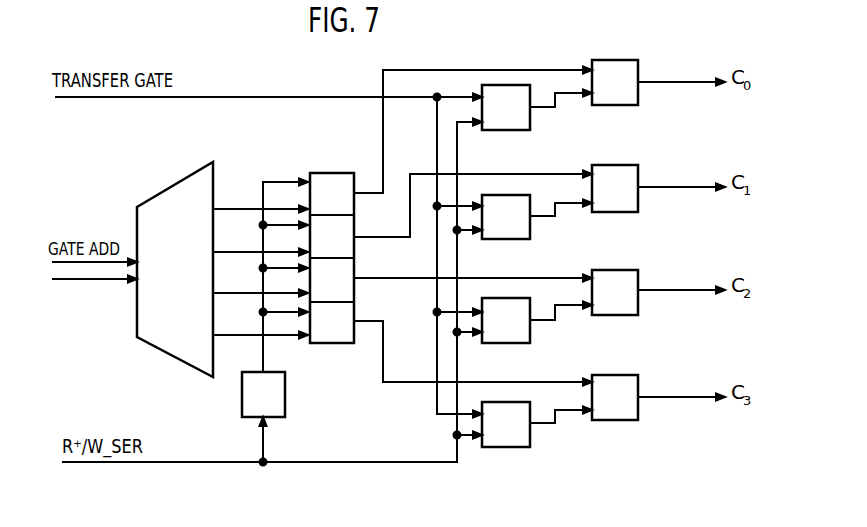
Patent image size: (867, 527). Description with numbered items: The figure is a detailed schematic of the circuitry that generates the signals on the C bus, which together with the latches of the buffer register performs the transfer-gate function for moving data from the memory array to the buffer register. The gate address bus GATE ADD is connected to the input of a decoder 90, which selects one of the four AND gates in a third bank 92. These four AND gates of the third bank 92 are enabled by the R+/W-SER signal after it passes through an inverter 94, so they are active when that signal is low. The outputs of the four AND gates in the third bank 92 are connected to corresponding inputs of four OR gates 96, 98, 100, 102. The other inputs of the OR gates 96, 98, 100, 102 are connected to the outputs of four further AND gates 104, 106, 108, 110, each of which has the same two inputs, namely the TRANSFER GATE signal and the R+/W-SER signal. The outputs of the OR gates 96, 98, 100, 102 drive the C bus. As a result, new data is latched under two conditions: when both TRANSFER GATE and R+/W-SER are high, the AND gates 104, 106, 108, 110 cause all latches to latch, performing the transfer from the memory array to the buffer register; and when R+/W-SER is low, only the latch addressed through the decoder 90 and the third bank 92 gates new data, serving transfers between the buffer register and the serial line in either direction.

The decoder 90 is at (184, 366).
The third bank 92 is at (332, 346).
The inverter 94 is at (285, 401).
The OR gate 96 is at (612, 59).
The OR gate 98 is at (612, 164).
The OR gate 100 is at (612, 269).
The OR gate 102 is at (612, 374).
The AND gate 104 is at (500, 132).
The AND gate 106 is at (500, 241).
The AND gate 108 is at (500, 345).
The AND gate 110 is at (500, 449).